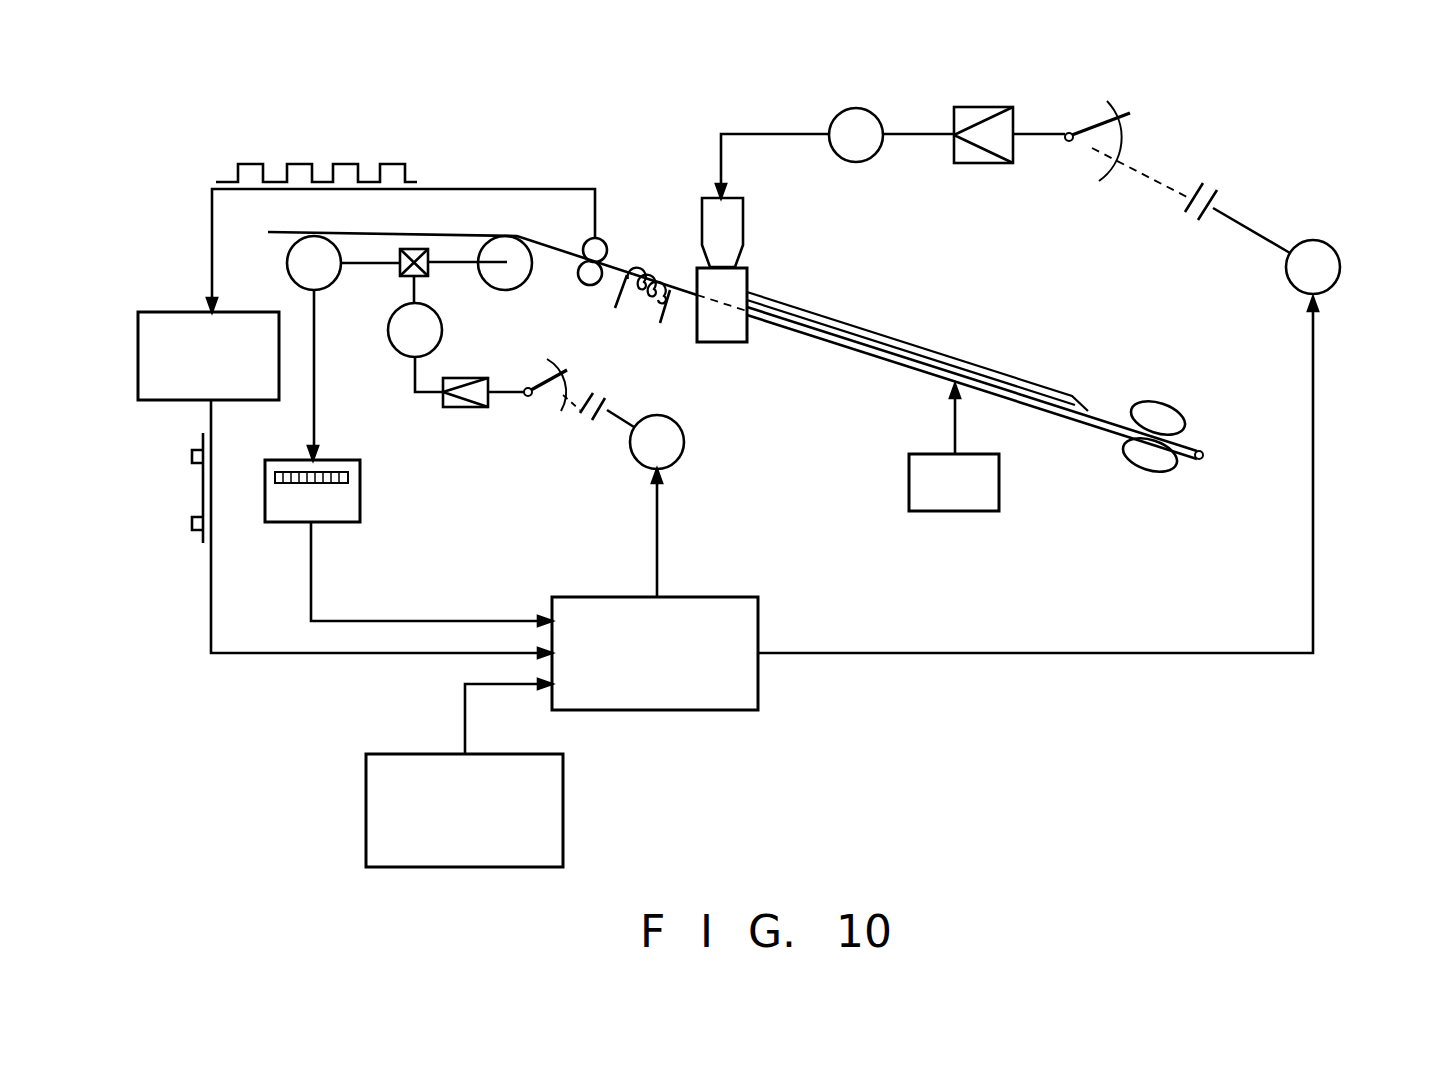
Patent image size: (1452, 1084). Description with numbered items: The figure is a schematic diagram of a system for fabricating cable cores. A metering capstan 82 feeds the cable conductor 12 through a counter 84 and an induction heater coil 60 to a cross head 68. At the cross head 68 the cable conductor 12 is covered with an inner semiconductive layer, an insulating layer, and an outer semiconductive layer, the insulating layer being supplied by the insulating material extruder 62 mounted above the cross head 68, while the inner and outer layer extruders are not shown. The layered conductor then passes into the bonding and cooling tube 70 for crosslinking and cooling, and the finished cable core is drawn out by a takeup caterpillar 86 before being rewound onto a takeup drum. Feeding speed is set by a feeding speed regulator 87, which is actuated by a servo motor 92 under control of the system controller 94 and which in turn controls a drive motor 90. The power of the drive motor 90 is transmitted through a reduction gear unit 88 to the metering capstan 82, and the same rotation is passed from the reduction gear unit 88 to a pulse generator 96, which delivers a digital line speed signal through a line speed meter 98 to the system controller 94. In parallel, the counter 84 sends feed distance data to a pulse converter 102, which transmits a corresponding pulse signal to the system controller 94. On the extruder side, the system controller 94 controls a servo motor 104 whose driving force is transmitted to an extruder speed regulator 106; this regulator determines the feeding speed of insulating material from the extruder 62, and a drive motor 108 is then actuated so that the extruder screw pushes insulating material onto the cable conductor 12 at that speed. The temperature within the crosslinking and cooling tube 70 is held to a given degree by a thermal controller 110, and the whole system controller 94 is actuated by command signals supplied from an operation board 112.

The cable conductor 12 is at (297, 231).
The induction heater coil 60 is at (650, 275).
The insulating material extruder 62 is at (702, 215).
The cross head 68 is at (747, 290).
The bonding and cooling tube 70 is at (1002, 375).
The metering capstan 82 is at (513, 245).
The counter 84 is at (600, 240).
The takeup caterpillar 86 is at (1178, 410).
The feeding speed regulator 87 is at (545, 408).
The reduction gear unit 88 is at (400, 276).
The drive motor 90 is at (443, 332).
The servo motor 92 is at (686, 445).
The system controller 94 is at (712, 597).
The pulse generator 96 is at (288, 270).
The line speed meter 98 is at (362, 505).
The pulse converter 102 is at (138, 372).
The servo motor 104 is at (1342, 267).
The extruder speed regulator 106 is at (1130, 138).
The drive motor 108 is at (879, 120).
The thermal controller 110 is at (1003, 487).
The operation board 112 is at (563, 798).